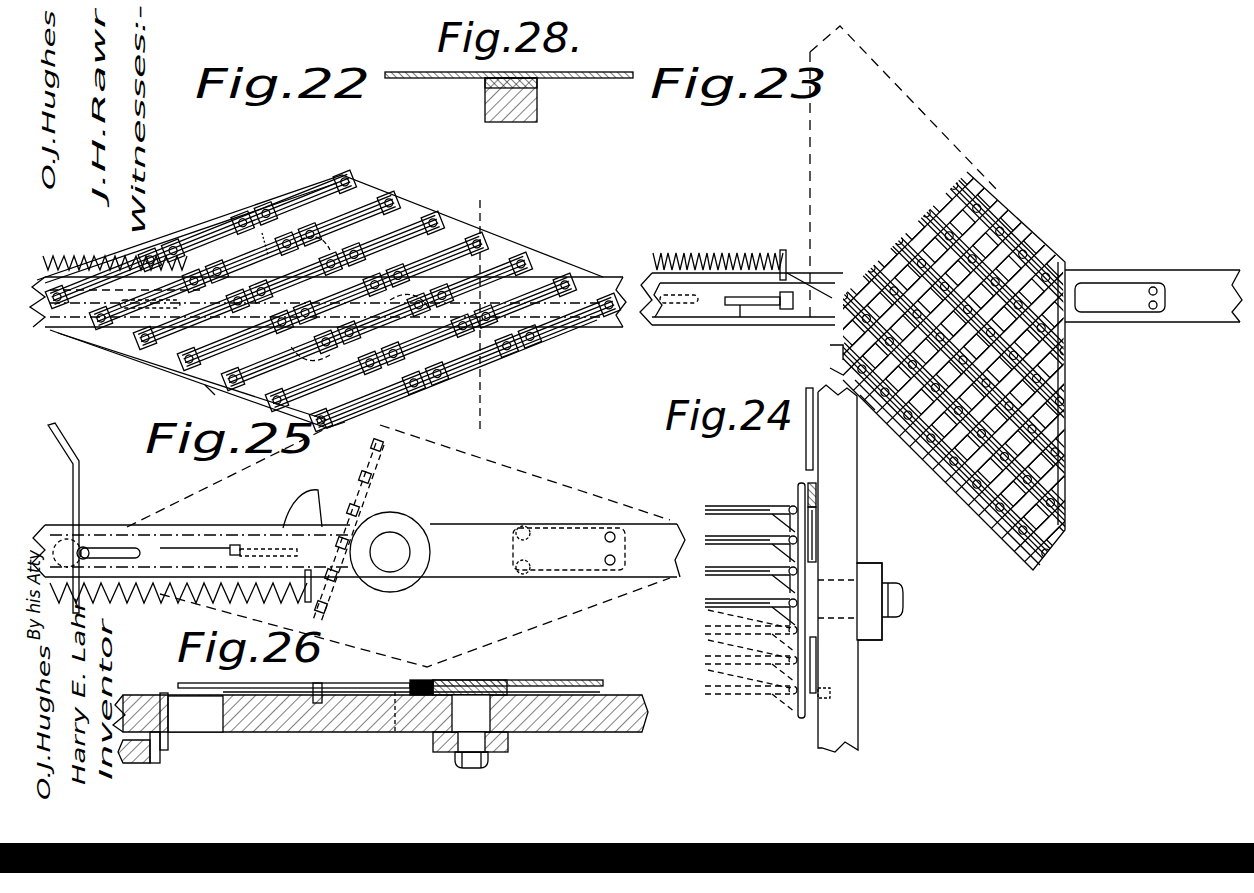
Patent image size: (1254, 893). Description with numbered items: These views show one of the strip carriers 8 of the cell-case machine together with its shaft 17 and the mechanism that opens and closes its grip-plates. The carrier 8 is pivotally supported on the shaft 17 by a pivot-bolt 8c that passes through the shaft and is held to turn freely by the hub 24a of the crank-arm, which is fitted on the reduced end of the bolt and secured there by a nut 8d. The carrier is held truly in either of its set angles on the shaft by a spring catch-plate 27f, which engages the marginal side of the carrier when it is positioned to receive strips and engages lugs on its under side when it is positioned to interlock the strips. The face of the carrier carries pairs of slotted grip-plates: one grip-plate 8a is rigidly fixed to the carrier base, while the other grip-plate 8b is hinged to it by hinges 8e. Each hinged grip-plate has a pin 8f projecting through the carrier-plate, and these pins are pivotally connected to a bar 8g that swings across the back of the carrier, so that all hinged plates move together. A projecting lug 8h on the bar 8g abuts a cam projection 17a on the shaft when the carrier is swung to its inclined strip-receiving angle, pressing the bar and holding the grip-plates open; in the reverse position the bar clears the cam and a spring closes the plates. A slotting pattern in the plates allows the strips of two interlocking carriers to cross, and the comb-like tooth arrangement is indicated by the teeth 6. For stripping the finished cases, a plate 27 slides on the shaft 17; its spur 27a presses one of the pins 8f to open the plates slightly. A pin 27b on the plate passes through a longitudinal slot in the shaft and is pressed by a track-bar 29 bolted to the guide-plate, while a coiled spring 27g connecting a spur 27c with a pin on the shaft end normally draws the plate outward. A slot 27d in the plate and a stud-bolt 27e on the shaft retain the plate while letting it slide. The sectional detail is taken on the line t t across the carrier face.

In FIG. 23, the comb 6 is at (935, 248).
In FIG. 24, the comb 6 is at (725, 572).
In FIG. 22, the carrier 8 is at (320, 290).
In FIG. 28, the carrier 8 is at (562, 78).
In FIG. 23, the carrier 8 is at (954, 366).
In FIG. 24, the carrier 8 is at (801, 600).
In FIG. 26, the carrier 8 is at (518, 706).
In FIG. 22, the fixed grip-plate 8a is at (278, 225).
In FIG. 23, the fixed grip-plate 8a is at (900, 415).
In FIG. 24, the fixed grip-plate 8a is at (745, 512).
In FIG. 22, the hinged grip-plate 8b is at (290, 235).
In FIG. 23, the hinged grip-plate 8b is at (1030, 245).
In FIG. 24, the hinged grip-plate 8b is at (718, 510).
In FIG. 24, the pivot-bolt 8c is at (870, 594).
In FIG. 26, the pivot-bolt 8c is at (508, 742).
In FIG. 24, the nut 8d is at (900, 598).
In FIG. 26, the nut 8d is at (488, 762).
In FIG. 22, the hinge 8e is at (495, 250).
In FIG. 23, the hinge 8e is at (1060, 420).
In FIG. 24, the hinge 8e is at (805, 652).
In FIG. 22, the pin 8f is at (262, 233).
In FIG. 23, the pin 8f is at (830, 345).
In FIG. 24, the pin 8f is at (818, 548).
In FIG. 26, the pin 8f is at (420, 680).
In FIG. 22, the bar 8g is at (265, 290).
In FIG. 23, the bar 8g is at (895, 266).
In FIG. 24, the bar 8g is at (820, 530).
In FIG. 26, the bar 8g is at (440, 680).
In FIG. 22, the projecting lug 8h is at (338, 426).
In FIG. 23, the projecting lug 8h is at (830, 368).
In FIG. 24, the projecting lug 8h is at (816, 495).
In FIG. 25, the projecting lug 8h is at (356, 435).
In FIG. 22, the shaft 17 is at (605, 277).
In FIG. 28, the shaft 17 is at (503, 122).
In FIG. 23, the shaft 17 is at (826, 273).
In FIG. 24, the shaft 17 is at (850, 568).
In FIG. 25, the shaft 17 is at (358, 550).
In FIG. 26, the shaft 17 is at (338, 732).
In FIG. 22, the cam projection 17a is at (210, 376).
In FIG. 23, the cam projection 17a is at (875, 408).
In FIG. 25, the cam projection 17a is at (348, 530).
In FIG. 24, the hub 24a is at (858, 562).
In FIG. 26, the hub 24a is at (442, 752).
In FIG. 22, the plate 27 is at (55, 330).
In FIG. 23, the plate 27 is at (682, 318).
In FIG. 25, the plate 27 is at (225, 537).
In FIG. 26, the plate 27 is at (384, 707).
In FIG. 23, the spur 27a is at (819, 285).
In FIG. 25, the spur 27a is at (370, 588).
In FIG. 25, the pin 27b is at (84, 550).
In FIG. 26, the pin 27b is at (170, 732).
In FIG. 23, the spur 27c is at (785, 252).
In FIG. 25, the spur 27c is at (312, 600).
In FIG. 23, the slot 27d is at (748, 318).
In FIG. 25, the slot 27d is at (260, 540).
In FIG. 26, the slot 27d is at (395, 732).
In FIG. 23, the stud-bolt 27e is at (759, 291).
In FIG. 25, the stud-bolt 27e is at (232, 560).
In FIG. 26, the stud-bolt 27e is at (318, 683).
In FIG. 28, the spring catch-plate 27f is at (485, 98).
In FIG. 23, the spring catch-plate 27f is at (1120, 297).
In FIG. 24, the spring catch-plate 27f is at (812, 450).
In FIG. 25, the spring catch-plate 27f is at (540, 548).
In FIG. 22, the coiled spring 27g is at (68, 262).
In FIG. 23, the coiled spring 27g is at (672, 258).
In FIG. 25, the coiled spring 27g is at (148, 595).
In FIG. 25, the track-bar 29 is at (79, 485).
In FIG. 26, the track-bar 29 is at (156, 763).
In FIG. 22, the section line t is at (477, 304).